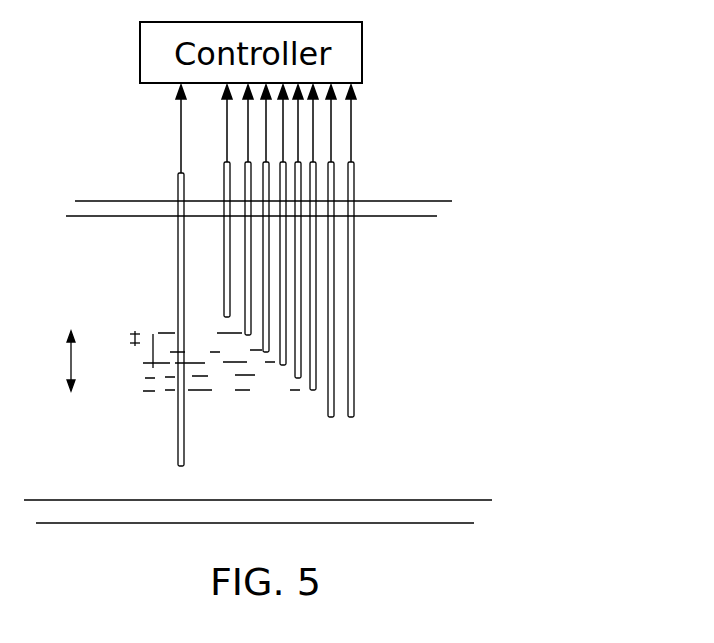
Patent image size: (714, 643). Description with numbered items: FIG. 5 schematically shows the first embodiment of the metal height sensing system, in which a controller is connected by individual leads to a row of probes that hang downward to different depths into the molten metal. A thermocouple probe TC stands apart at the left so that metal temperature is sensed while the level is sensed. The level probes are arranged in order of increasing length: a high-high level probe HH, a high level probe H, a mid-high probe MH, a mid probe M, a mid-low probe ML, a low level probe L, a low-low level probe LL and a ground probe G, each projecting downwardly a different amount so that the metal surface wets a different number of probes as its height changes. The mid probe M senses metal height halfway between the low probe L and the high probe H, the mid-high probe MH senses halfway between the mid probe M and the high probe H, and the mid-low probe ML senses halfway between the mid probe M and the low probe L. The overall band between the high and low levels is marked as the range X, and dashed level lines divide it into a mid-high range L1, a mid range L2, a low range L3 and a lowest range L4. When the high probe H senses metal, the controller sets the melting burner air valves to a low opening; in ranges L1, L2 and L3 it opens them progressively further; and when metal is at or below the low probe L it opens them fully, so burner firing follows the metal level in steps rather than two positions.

The thermocouple probe TC is at (180, 181).
The high-high level probe HH is at (229, 163).
The high level probe H is at (250, 163).
The mid-high probe MH is at (268, 171).
The mid probe M is at (285, 179).
The mid-low probe ML is at (300, 189).
The low level probe L is at (315, 204).
The low-low level probe LL is at (334, 237).
The ground probe G is at (354, 255).
The metal level range X is at (59, 361).
The mid-high range L1 is at (183, 349).
The mid range L2 is at (189, 363).
The low range L3 is at (179, 376).
The low level range L4 is at (202, 389).